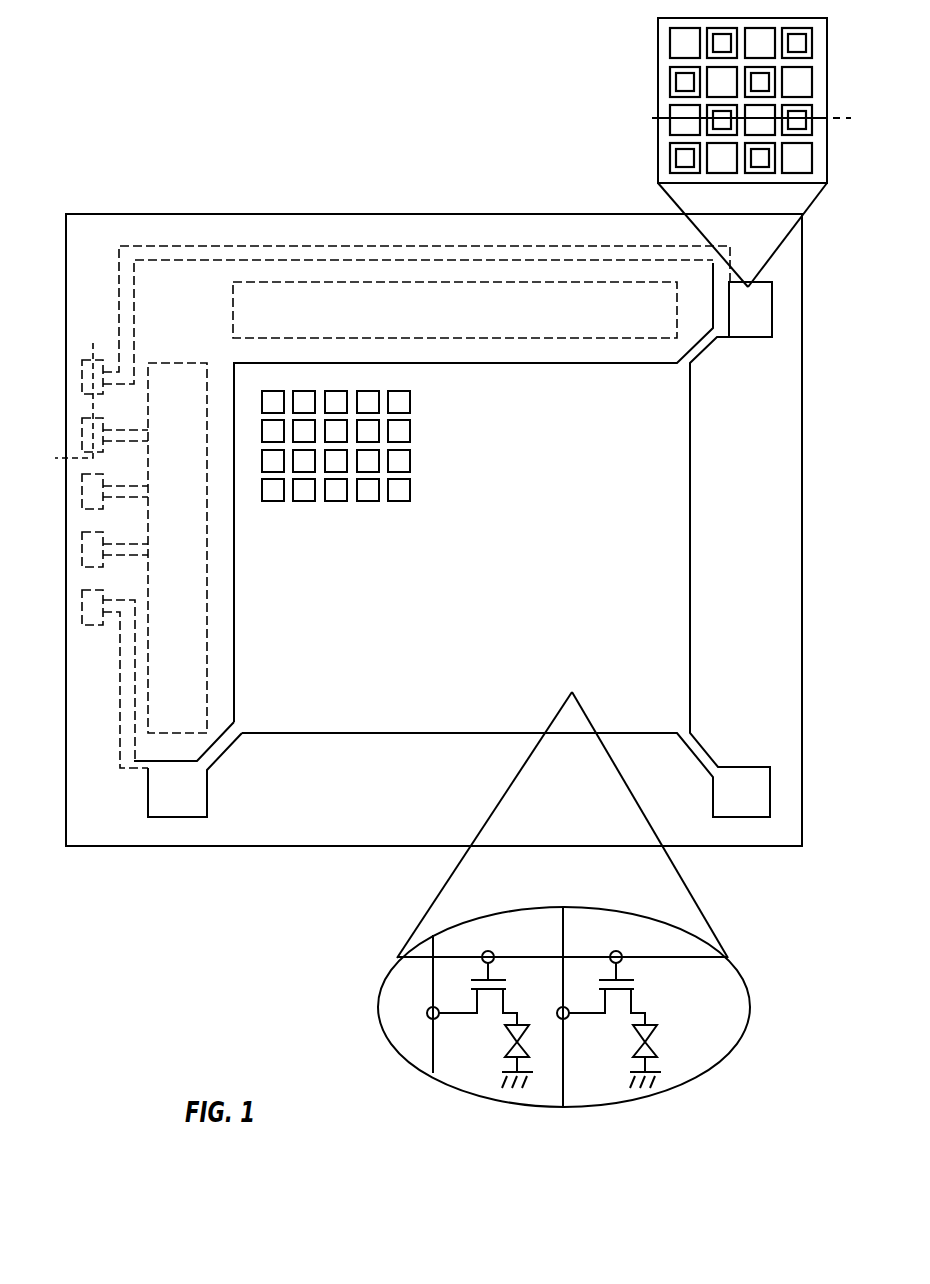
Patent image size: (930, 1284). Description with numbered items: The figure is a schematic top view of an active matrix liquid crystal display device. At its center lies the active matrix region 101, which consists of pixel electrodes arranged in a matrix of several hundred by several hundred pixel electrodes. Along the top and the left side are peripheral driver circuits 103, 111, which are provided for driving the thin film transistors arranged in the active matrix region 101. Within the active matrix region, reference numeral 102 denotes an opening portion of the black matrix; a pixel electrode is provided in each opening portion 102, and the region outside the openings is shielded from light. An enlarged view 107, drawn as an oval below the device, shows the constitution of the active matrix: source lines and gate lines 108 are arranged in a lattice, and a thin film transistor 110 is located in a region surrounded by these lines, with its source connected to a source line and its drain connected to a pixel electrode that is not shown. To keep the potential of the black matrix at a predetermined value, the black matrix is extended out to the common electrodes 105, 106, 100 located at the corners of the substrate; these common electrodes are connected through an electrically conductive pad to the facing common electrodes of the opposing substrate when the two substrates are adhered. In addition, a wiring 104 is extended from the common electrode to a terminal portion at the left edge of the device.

The common electrode 100 is at (434, 548).
The active matrix region 101 is at (345, 716).
The opening portion of the black matrix 102 is at (336, 466).
The peripheral driver circuit 103 is at (475, 323).
The wiring 104 is at (376, 474).
The common electrode 105 is at (758, 210).
The common electrode 106 is at (754, 768).
The enlarged view 107 is at (578, 899).
The gate lines 108 is at (562, 917).
The thin film transistor 110 is at (528, 982).
The peripheral driver circuit 111 is at (197, 716).